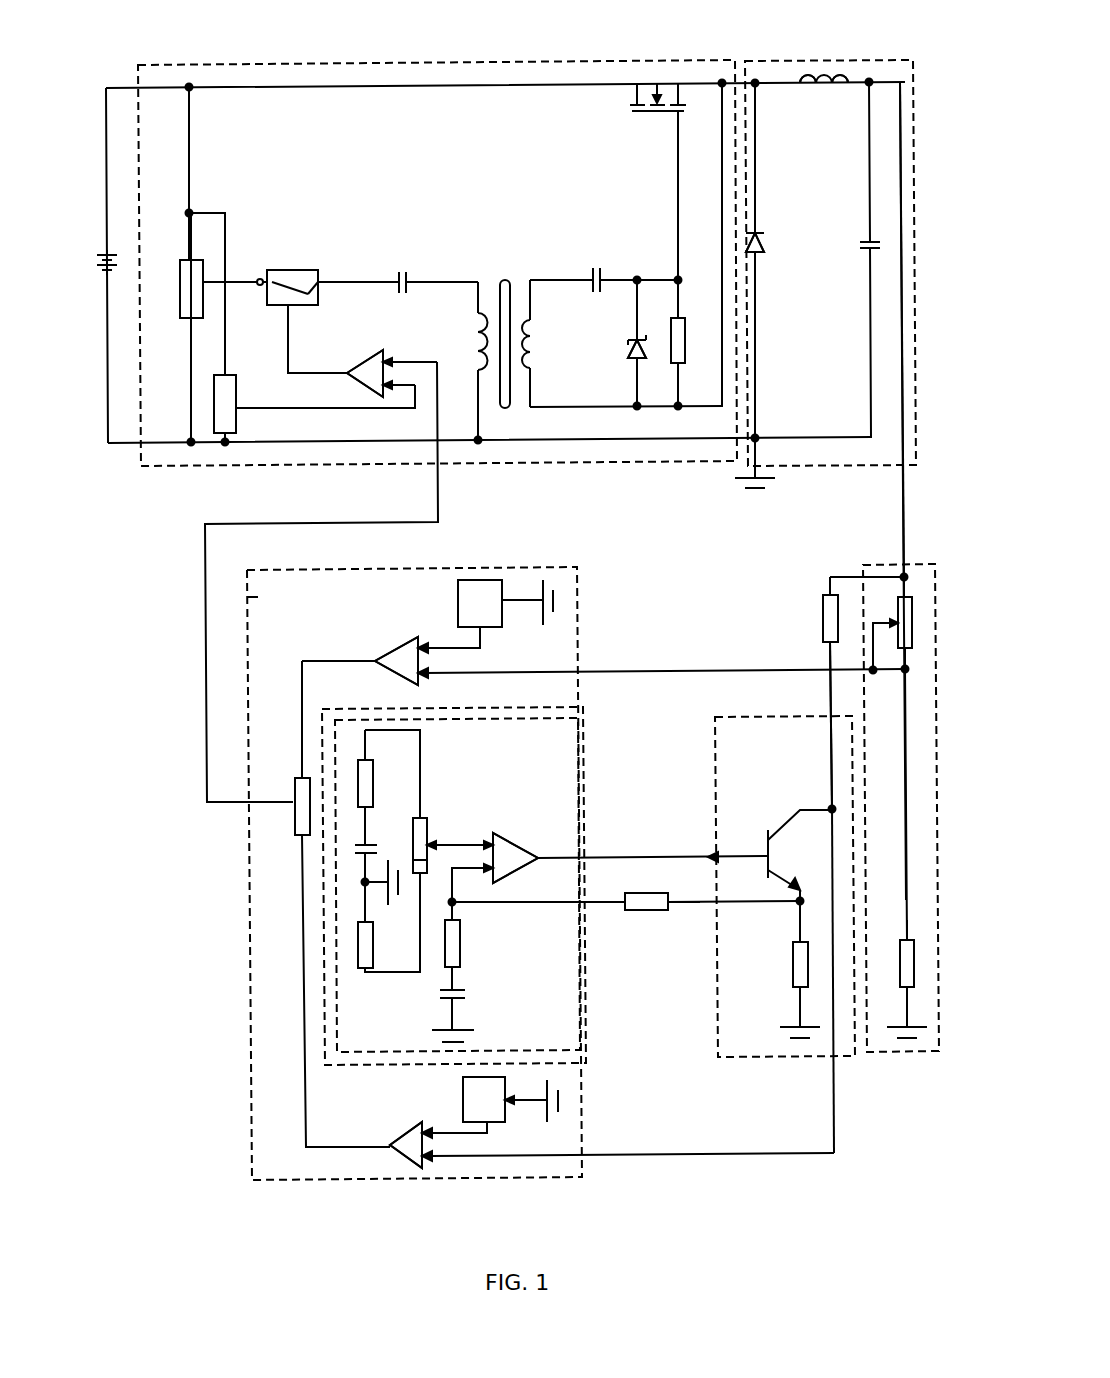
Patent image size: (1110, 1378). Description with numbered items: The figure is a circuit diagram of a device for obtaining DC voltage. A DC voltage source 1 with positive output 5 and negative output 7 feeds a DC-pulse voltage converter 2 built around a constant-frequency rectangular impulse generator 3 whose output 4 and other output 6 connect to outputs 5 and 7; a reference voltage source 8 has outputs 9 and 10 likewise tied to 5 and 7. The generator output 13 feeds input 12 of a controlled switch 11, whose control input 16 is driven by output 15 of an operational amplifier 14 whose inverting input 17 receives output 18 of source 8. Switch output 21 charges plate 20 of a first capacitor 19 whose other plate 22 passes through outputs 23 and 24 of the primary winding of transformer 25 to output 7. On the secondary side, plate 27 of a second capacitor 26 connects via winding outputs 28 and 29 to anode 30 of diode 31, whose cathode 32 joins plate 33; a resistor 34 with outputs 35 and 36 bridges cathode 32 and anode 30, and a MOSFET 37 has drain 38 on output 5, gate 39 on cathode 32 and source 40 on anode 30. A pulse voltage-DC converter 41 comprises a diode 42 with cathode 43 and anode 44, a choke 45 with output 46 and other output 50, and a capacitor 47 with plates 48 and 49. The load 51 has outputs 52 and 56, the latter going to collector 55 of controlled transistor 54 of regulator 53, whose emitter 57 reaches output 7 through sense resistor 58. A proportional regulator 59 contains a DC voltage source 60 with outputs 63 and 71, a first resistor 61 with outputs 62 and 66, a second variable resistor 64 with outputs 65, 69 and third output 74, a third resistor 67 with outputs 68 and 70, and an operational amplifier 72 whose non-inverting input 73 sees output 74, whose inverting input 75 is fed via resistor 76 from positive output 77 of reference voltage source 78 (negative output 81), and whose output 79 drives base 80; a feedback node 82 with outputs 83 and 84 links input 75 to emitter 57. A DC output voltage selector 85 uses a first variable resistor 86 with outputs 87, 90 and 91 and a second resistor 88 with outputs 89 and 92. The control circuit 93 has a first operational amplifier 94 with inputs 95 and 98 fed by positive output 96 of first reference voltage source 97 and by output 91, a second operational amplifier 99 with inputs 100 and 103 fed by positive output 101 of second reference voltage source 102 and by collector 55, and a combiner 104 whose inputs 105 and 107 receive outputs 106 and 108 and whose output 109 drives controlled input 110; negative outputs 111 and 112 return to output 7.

The DC voltage source 1 is at (100, 265).
The DC-pulse voltage converter 2 is at (189, 83).
The constant-frequency rectangular impulse generator 3 is at (190, 260).
The output of the generator 4 is at (191, 256).
The positive output of the DC voltage source 5 is at (108, 256).
The other output of the generator 6 is at (203, 306).
The negative output of the DC voltage source 7 is at (108, 272).
The reference voltage source 8 is at (222, 420).
The output of the reference voltage source 9 is at (231, 378).
The other output of the reference voltage source 10 is at (228, 443).
The controlled switch 11 is at (288, 288).
The input of the controlled switch 12 is at (268, 282).
The output of the pulse generator 13 is at (197, 272).
The operational amplifier 14 is at (375, 357).
The output of the operational amplifier 15 is at (355, 375).
The control input of the controlled switch 16 is at (290, 306).
The inverting input of the operational amplifier 17 is at (390, 385).
The output of the reference voltage source 18 is at (238, 407).
The first capacitor 19 is at (403, 270).
The plate of the first capacitor 20 is at (399, 280).
The output of the controlled switch 21 is at (315, 282).
The other plate of the first capacitor 22 is at (407, 280).
The output of the primary winding 23 is at (477, 303).
The second output of the primary winding 24 is at (477, 385).
The transformer 25 is at (503, 280).
The second capacitor 26 is at (593, 278).
The plate of the second capacitor 27 is at (593, 276).
The output of the secondary winding 28 is at (531, 303).
The output of the secondary winding 29 is at (531, 385).
The anode of the diode 30 is at (634, 360).
The diode 31 is at (632, 335).
The cathode of the diode 32 is at (640, 338).
The other plate of the second capacitor 33 is at (601, 293).
The resistor 34 is at (680, 345).
The output of the resistor 35 is at (685, 322).
The other output of the resistor 36 is at (685, 366).
The MOSFET 37 is at (657, 94).
The drain of the MOSFET 38 is at (636, 94).
The gate of the MOSFET 39 is at (677, 118).
The source of the MOSFET 40 is at (680, 93).
The pulse voltage-DC converter 41 is at (848, 66).
The diode 42 is at (722, 80).
The cathode of the diode 43 is at (757, 237).
The anode of the diode 44 is at (757, 254).
The choke 45 is at (808, 80).
The output of the choke 46 is at (798, 86).
The capacitor 47 is at (871, 238).
The plate of the capacitor 48 is at (868, 250).
The other plate of the capacitor 49 is at (868, 243).
The other output of the choke 50 is at (850, 86).
The load 51 is at (833, 610).
The output of the load 52 is at (828, 597).
The regulator 53 is at (843, 1003).
The controlled transistor 54 is at (770, 856).
The collector of the controlled transistor 55 is at (800, 812).
The other output of the load 56 is at (829, 645).
The emitter of the controlled transistor 57 is at (801, 890).
The sense resistor 58 is at (848, 1015).
The proportional regulator 59 is at (343, 732).
The DC voltage source 60 is at (365, 848).
The first resistor 61 is at (363, 760).
The output of the first resistor 62 is at (377, 802).
The positive output of the DC voltage source 63 is at (362, 847).
The second (variable) resistor 64 is at (418, 878).
The output of the second resistor 65 is at (423, 817).
The other output of the first resistor 66 is at (392, 851).
The third resistor 67 is at (358, 935).
The output of the third resistor 68 is at (366, 970).
The other output of the second resistor 69 is at (422, 878).
The other output of the third resistor 70 is at (377, 940).
The negative output of the DC voltage source 71 is at (363, 883).
The operational amplifier 72 is at (515, 883).
The non-inverting input of the operational amplifier 73 is at (494, 834).
The third output of the second resistor 74 is at (460, 853).
The inverting input of the operational amplifier 75 is at (471, 885).
The resistor 76 is at (455, 945).
The positive output of the reference voltage source 77 is at (450, 992).
The reference voltage source 78 is at (462, 1005).
The output of the operational amplifier 79 is at (542, 862).
The base of the controlled transistor 80 is at (767, 852).
The negative output of the reference voltage source 81 is at (440, 1030).
The feedback node 82 is at (652, 910).
The output of the feedback node 83 is at (626, 896).
The other output of the feedback node 84 is at (670, 908).
The DC output voltage selector 85 is at (925, 635).
The first (variable) resistor 86 is at (906, 612).
The output of the first resistor 87 is at (917, 582).
The second resistor 88 is at (908, 965).
The output of the second resistor 89 is at (907, 942).
The other output of the first resistor 90 is at (918, 669).
The third output of the first resistor 91 is at (893, 622).
The other output of the second resistor 92 is at (907, 990).
The control circuit 93 is at (333, 592).
The first operational amplifier 94 is at (375, 661).
The non-inverting input of the first operational amplifier 95 is at (428, 646).
The positive output of the first reference voltage source 96 is at (481, 634).
The first reference voltage source 97 is at (458, 596).
The inverting input of the first operational amplifier 98 is at (430, 673).
The second operational amplifier 99 is at (392, 1150).
The non-inverting input of the second operational amplifier 100 is at (430, 1131).
The positive output of the second reference voltage source 101 is at (487, 1125).
The second reference voltage source 102 is at (506, 1120).
The inverting input of the second operational amplifier 103 is at (452, 1148).
The combiner 104 is at (300, 816).
The first input of the combiner 105 is at (300, 772).
The output of the first operational amplifier 106 is at (382, 660).
The second input of the combiner 107 is at (301, 838).
The output of the second operational amplifier 108 is at (420, 1141).
The output of the combiner 109 is at (294, 800).
The controlled input of the DC-pulse voltage converter 110 is at (388, 362).
The negative output of the first reference voltage source 111 is at (503, 600).
The negative output of the second reference voltage source 112 is at (507, 1099).